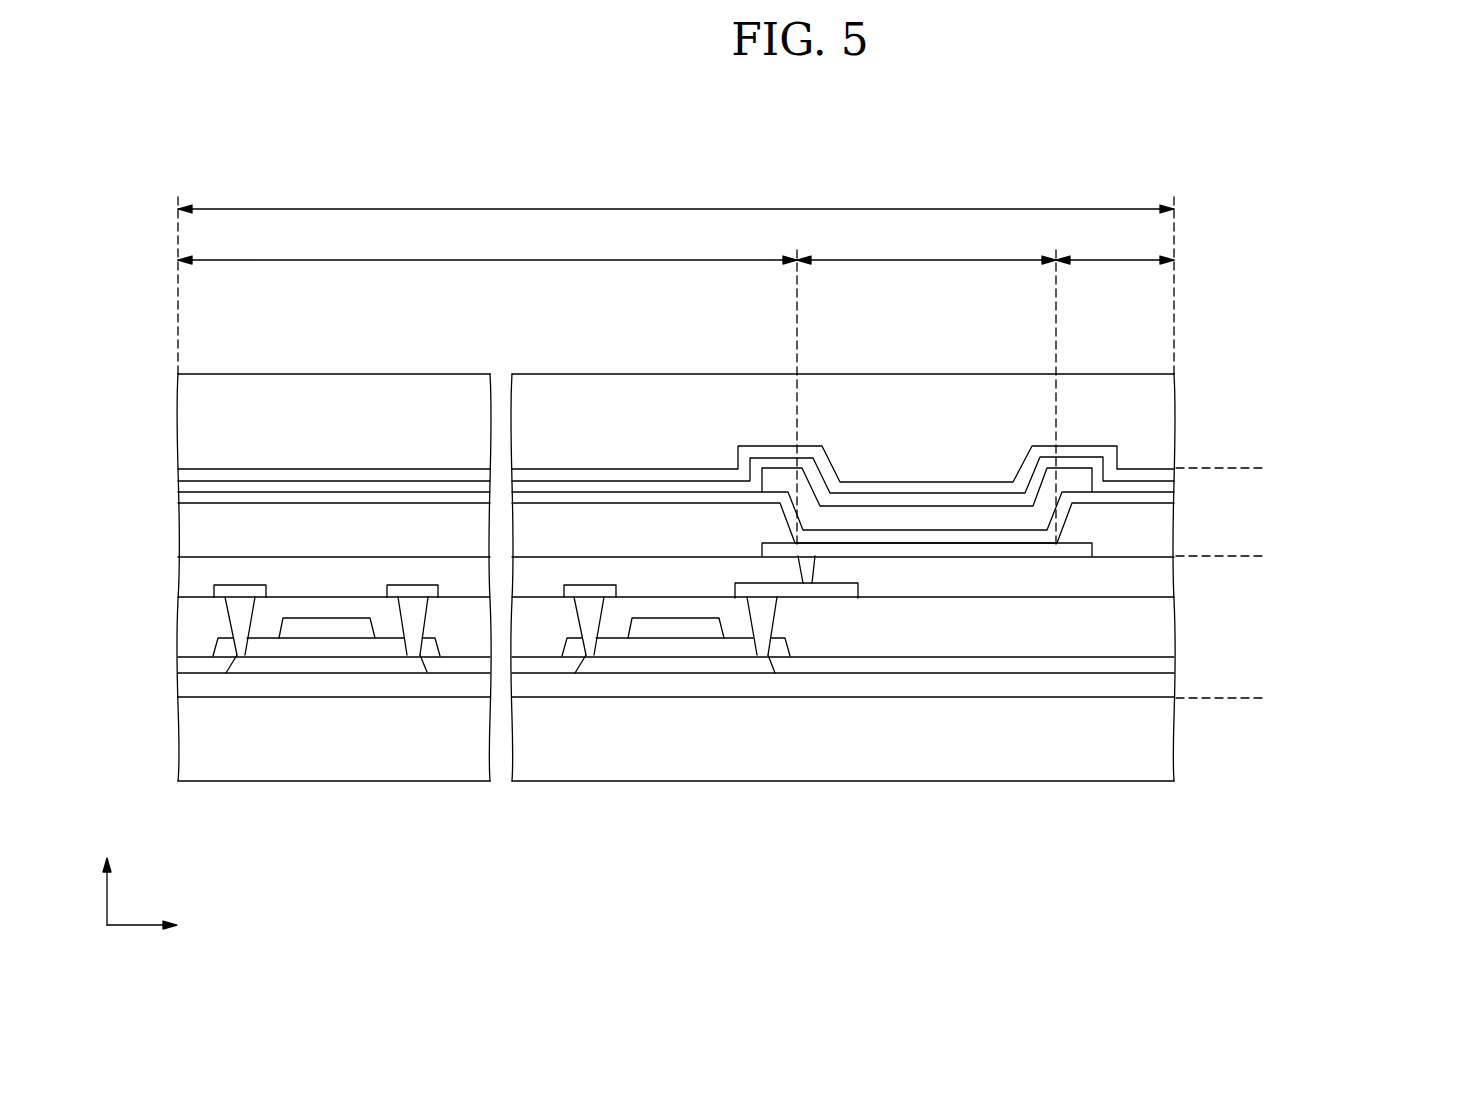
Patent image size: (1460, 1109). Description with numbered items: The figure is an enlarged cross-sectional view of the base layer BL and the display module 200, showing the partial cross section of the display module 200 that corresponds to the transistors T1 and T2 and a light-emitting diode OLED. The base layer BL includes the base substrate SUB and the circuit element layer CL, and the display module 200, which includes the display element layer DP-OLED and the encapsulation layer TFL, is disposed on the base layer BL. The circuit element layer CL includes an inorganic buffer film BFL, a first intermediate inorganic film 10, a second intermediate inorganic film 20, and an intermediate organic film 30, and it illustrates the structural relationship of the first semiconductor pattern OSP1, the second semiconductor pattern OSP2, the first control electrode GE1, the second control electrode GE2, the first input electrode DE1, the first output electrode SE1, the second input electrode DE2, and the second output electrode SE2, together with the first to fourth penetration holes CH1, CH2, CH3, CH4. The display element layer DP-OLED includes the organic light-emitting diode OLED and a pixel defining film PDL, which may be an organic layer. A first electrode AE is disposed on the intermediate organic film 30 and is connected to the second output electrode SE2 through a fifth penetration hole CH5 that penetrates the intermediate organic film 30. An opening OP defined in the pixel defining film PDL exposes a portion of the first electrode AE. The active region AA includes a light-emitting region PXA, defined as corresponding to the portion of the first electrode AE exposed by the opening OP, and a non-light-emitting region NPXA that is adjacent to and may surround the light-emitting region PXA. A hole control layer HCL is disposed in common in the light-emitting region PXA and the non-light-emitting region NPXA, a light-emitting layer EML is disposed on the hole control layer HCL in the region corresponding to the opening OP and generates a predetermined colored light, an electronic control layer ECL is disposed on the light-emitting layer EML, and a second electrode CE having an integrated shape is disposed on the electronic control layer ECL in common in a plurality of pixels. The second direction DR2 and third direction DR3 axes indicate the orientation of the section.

The active region AA is at (676, 275).
The non-light-emitting region NPXA is at (676, 246).
The light-emitting region PXA is at (926, 387).
The display module 200 is at (1383, 408).
The encapsulation layer TFL is at (1163, 420).
The base layer BL is at (1323, 615).
The base substrate SUB is at (1163, 735).
The circuit element layer CL is at (1263, 556).
The inorganic buffer film BFL is at (1163, 685).
The first intermediate inorganic film 10 is at (1163, 665).
The second intermediate inorganic film 20 is at (1163, 622).
The intermediate organic film 30 is at (1163, 577).
The display element layer DP-OLED is at (1263, 468).
The pixel defining film PDL is at (1163, 530).
The opening OP is at (1063, 517).
The organic light-emitting diode OLED is at (1050, 318).
The first electrode AE is at (855, 550).
The hole control layer HCL is at (899, 538).
The light-emitting layer EML is at (937, 518).
The electronic control layer ECL is at (990, 500).
The second electrode CE is at (1004, 487).
The first transistor T1 is at (448, 318).
The first input electrode DE1 is at (231, 592).
The first semiconductor pattern OSP1 is at (288, 657).
The first control electrode GE1 is at (349, 626).
The first output electrode SE1 is at (405, 602).
The second transistor T2 is at (748, 318).
The second input electrode DE2 is at (588, 600).
The second semiconductor pattern OSP2 is at (632, 660).
The second control electrode GE2 is at (693, 627).
The second output electrode SE2 is at (757, 603).
The first penetration hole CH1 is at (251, 643).
The second penetration hole CH2 is at (420, 644).
The third penetration hole CH3 is at (599, 643).
The fourth penetration hole CH4 is at (769, 644).
The fifth penetration hole CH5 is at (810, 575).
The second direction DR2 is at (165, 925).
The third direction DR3 is at (108, 879).